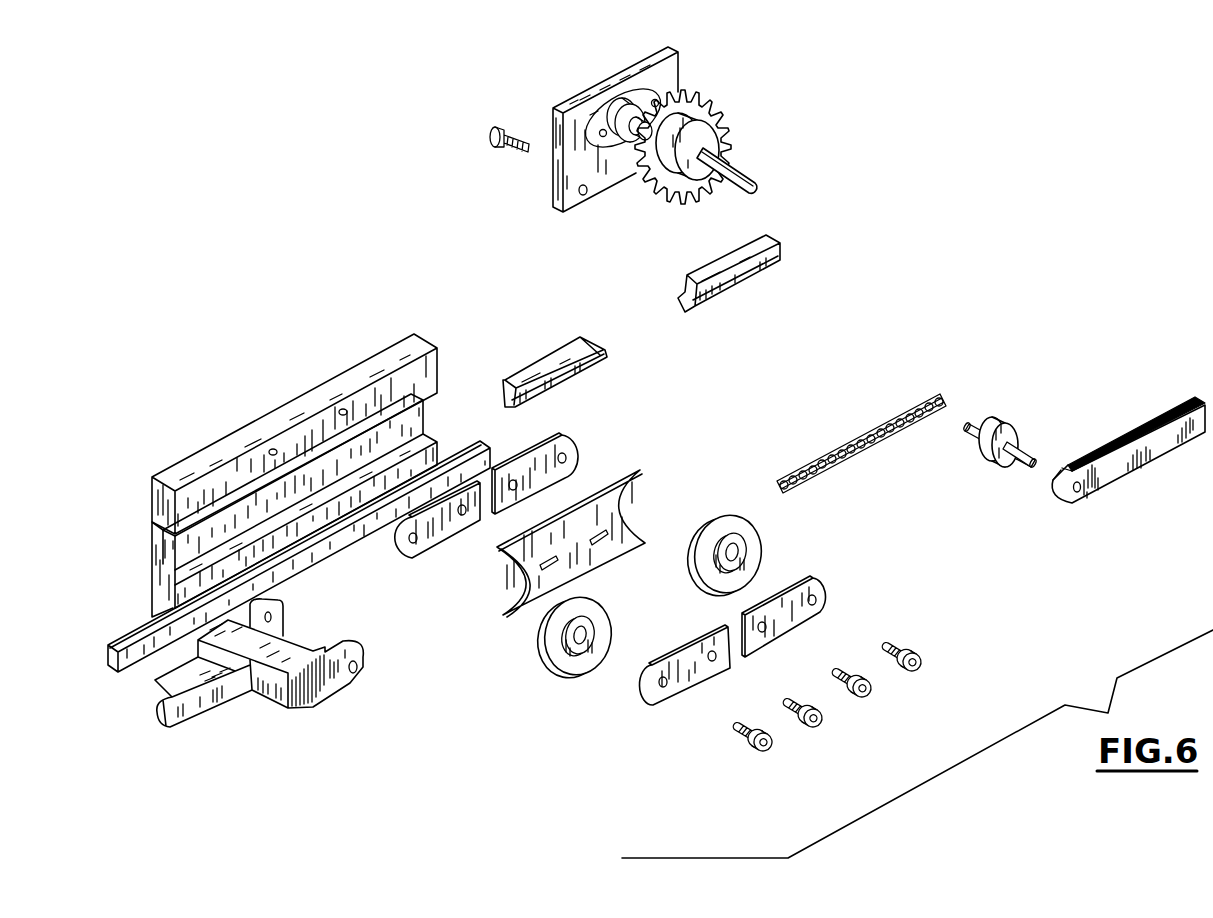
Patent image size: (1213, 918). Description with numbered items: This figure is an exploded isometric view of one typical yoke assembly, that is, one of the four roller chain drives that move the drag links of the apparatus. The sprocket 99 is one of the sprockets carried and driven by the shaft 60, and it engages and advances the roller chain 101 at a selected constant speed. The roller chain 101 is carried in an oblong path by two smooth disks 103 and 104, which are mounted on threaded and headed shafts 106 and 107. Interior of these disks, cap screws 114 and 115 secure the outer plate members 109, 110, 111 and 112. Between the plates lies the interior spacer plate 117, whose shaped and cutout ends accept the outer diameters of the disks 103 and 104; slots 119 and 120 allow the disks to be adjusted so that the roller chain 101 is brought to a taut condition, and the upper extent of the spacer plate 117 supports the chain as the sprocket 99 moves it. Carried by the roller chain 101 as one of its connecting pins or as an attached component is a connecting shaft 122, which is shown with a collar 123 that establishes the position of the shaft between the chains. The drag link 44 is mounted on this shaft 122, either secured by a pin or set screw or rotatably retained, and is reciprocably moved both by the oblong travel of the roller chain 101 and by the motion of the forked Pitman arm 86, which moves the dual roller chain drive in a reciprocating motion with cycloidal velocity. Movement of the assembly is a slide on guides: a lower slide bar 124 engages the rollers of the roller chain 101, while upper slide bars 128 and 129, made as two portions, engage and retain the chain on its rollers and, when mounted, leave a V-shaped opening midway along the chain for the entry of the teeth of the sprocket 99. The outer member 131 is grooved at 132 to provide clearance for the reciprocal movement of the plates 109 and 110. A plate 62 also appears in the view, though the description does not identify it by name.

The drag link 44 is at (1142, 430).
The shaft 60 is at (737, 173).
The mounting plate with bearing 62 is at (637, 67).
The Pitman arm 86 is at (166, 703).
The sprocket 99 is at (712, 113).
The roller chain 101 is at (848, 440).
The smooth disk 103 is at (560, 635).
The smooth disk 104 is at (710, 575).
The threaded and headed shaft 106 is at (770, 753).
The threaded and headed shaft 107 is at (922, 667).
The outer plate member 109 is at (437, 534).
The outer plate member 110 is at (567, 455).
The outer plate member 111 is at (655, 690).
The outer plate member 112 is at (817, 607).
The cap screw 114 is at (820, 727).
The cap screw 115 is at (868, 697).
The interior spacer plate 117 is at (573, 530).
The slot 119 is at (540, 570).
The slot 120 is at (607, 527).
The connecting shaft 122 is at (1022, 455).
The collar 123 is at (1005, 423).
The lower slide bar 124 is at (110, 658).
The upper slide bar 128 is at (550, 363).
The upper slide bar 129 is at (735, 258).
The outer member 131 is at (158, 590).
The groove 132 is at (167, 527).